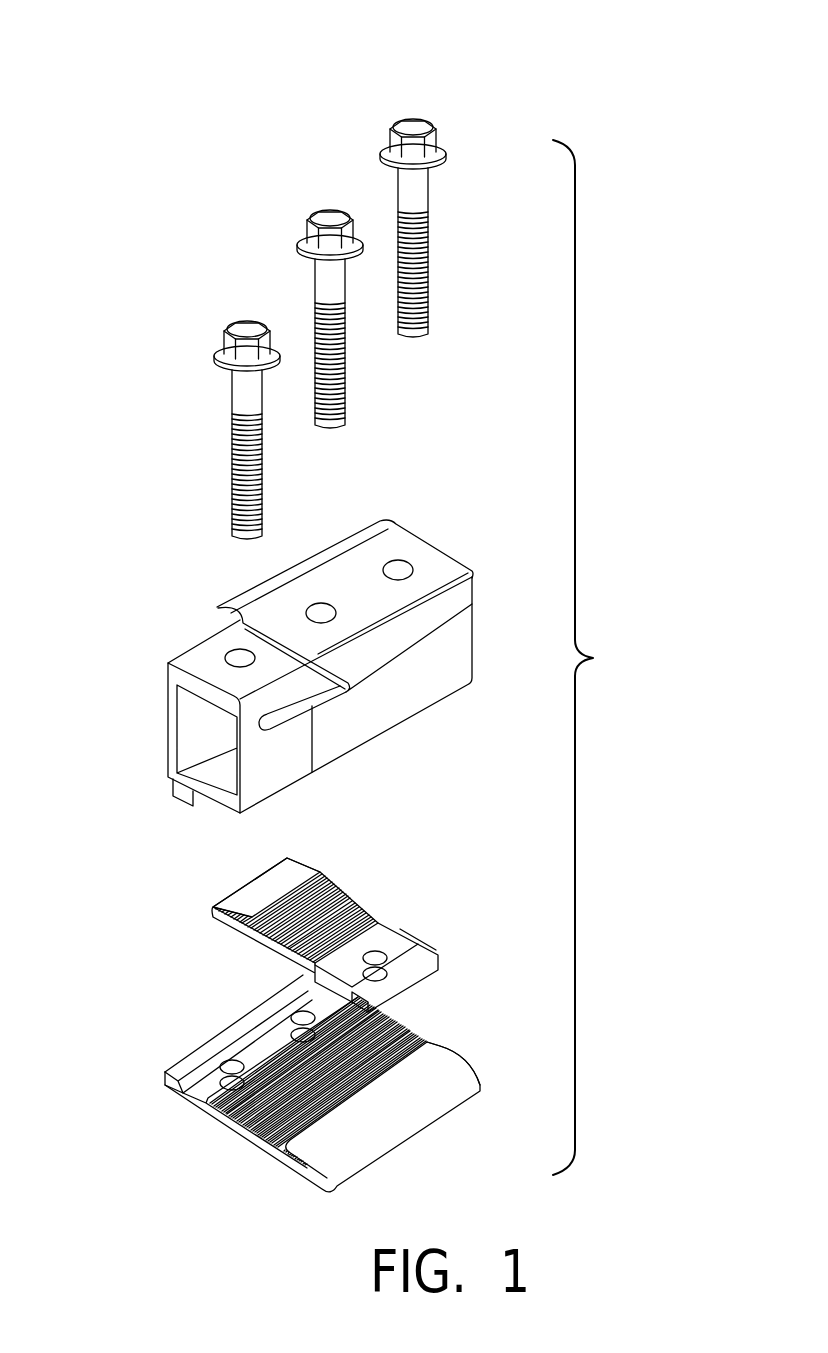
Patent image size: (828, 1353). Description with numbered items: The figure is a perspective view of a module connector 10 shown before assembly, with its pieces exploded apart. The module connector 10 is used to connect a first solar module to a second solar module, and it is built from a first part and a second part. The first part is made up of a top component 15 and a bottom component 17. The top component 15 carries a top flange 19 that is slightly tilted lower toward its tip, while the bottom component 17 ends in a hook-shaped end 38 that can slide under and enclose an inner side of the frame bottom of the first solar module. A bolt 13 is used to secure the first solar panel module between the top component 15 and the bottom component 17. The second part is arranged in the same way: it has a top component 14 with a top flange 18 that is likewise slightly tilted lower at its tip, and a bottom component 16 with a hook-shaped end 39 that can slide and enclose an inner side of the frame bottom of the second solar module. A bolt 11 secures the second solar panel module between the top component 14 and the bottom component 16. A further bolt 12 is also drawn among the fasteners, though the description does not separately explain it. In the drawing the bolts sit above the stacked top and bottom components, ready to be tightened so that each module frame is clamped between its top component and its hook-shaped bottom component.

The module connector 10 is at (638, 670).
The bolt 11 is at (243, 322).
The bolt 12 is at (330, 207).
The bolt 13 is at (413, 112).
The top component 14 is at (173, 797).
The top component 15 is at (472, 605).
The bottom component 16 is at (343, 1173).
The bottom component 17 is at (408, 932).
The top flange 18 is at (270, 718).
The top flange 19 is at (370, 520).
The hook-shaped end 38 is at (283, 877).
The hook-shaped end 39 is at (430, 1068).